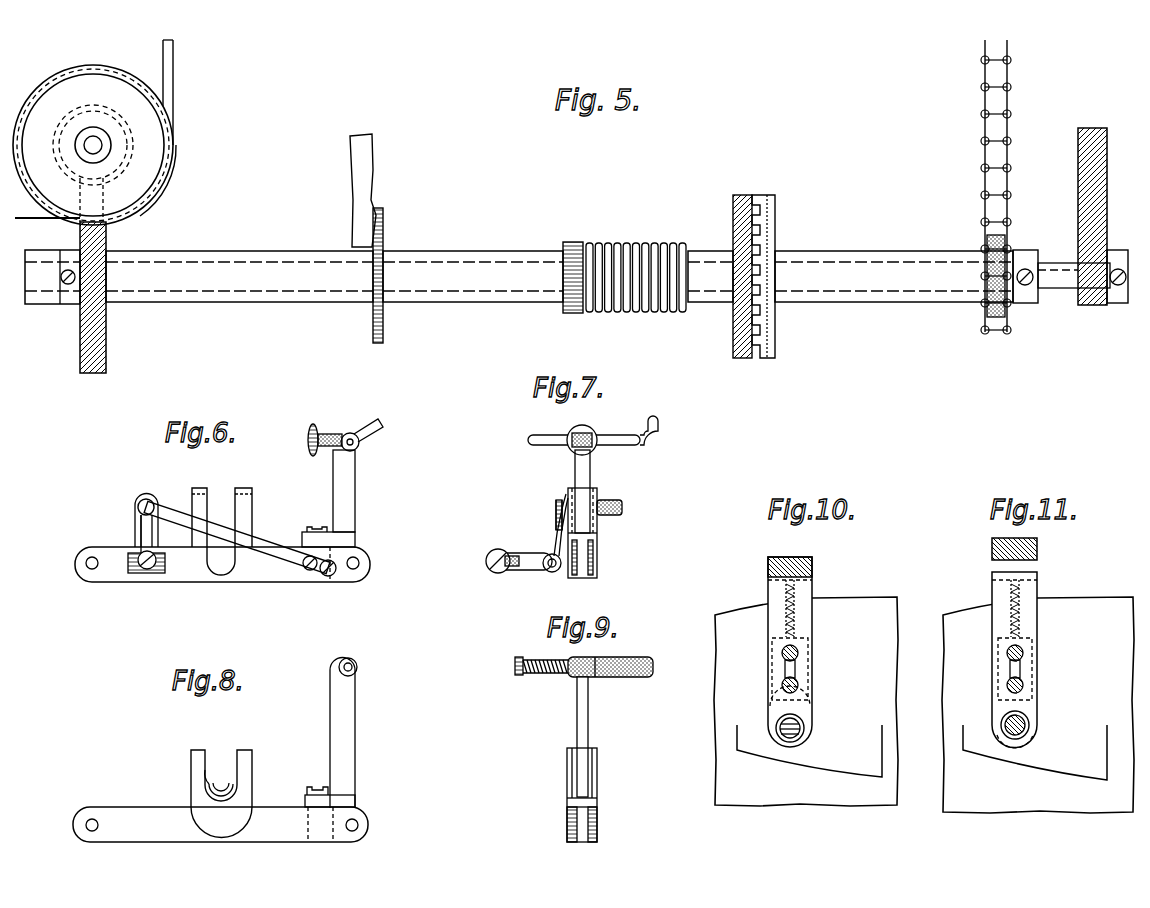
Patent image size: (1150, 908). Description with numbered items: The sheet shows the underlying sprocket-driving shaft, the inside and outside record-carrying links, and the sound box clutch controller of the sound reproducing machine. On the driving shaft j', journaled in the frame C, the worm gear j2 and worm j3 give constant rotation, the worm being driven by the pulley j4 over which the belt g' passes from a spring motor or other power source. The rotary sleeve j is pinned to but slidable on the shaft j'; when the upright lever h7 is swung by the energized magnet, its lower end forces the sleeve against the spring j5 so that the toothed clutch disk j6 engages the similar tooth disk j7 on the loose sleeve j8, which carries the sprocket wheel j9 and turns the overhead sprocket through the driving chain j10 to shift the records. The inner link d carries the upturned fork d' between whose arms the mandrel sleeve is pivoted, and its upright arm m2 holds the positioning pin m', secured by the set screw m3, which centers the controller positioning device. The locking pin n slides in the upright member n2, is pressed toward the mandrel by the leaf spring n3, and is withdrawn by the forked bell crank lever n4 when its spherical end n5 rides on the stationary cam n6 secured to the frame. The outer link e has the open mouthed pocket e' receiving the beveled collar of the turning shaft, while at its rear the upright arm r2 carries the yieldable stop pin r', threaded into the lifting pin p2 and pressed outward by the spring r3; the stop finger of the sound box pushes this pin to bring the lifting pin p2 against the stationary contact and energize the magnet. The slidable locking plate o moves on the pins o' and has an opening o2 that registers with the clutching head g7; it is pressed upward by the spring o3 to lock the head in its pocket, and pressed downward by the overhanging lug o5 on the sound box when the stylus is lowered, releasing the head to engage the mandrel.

In FIG. 5, the belt g' is at (175, 128).
In FIG. 5, the rotary sleeve j is at (558, 254).
In FIG. 5, the shaft j' is at (199, 261).
In FIG. 5, the worm gear j2 is at (106, 358).
In FIG. 5, the worm j3 is at (130, 150).
In FIG. 5, the pulley j4 is at (133, 178).
In FIG. 5, the spring j5 is at (645, 244).
In FIG. 5, the toothed clutch disk j6 is at (740, 195).
In FIG. 5, the tooth disk j7 is at (772, 230).
In FIG. 5, the loose sleeve j8 is at (885, 251).
In FIG. 5, the sprocket wheel j9 is at (985, 300).
In FIG. 5, the driving chain j10 is at (1010, 145).
In FIG. 5, the upright lever h7 is at (362, 172).
In FIG. 5, the frame C is at (1080, 168).
In FIG. 10, the frame C is at (862, 607).
In FIG. 11, the frame C is at (1105, 605).
In FIG. 6, the locking pin n is at (146, 499).
In FIG. 7, the locking pin n is at (622, 505).
In FIG. 6, the upright member n2 is at (135, 530).
In FIG. 6, the leaf spring n3 is at (262, 548).
In FIG. 7, the leaf spring n3 is at (556, 512).
In FIG. 6, the bell crank lever n4 is at (140, 535).
In FIG. 7, the bell crank lever n4 is at (556, 548).
In FIG. 6, the spherical end n5 is at (147, 570).
In FIG. 7, the spherical end n5 is at (499, 573).
In FIG. 6, the link d is at (222, 582).
In FIG. 6, the upturned fork d' is at (237, 531).
In FIG. 6, the positioning pin m' is at (377, 437).
In FIG. 6, the upright arm m2 is at (345, 513).
In FIG. 6, the set screw m3 is at (318, 430).
In FIG. 8, the link e is at (220, 809).
In FIG. 9, the link e is at (598, 795).
In FIG. 8, the open mouthed pocket e' is at (221, 781).
In FIG. 8, the stop pin r' is at (370, 666).
In FIG. 9, the stop pin r' is at (511, 685).
In FIG. 8, the upright arm r2 is at (348, 726).
In FIG. 9, the upright arm r2 is at (589, 726).
In FIG. 9, the spring r3 is at (550, 677).
In FIG. 9, the lifting pin p2 is at (655, 666).
In FIG. 10, the locking plate o is at (800, 652).
In FIG. 11, the locking plate o is at (1028, 660).
In FIG. 10, the pins o' is at (766, 669).
In FIG. 11, the pins o' is at (990, 669).
In FIG. 11, the opening o2 is at (1028, 716).
In FIG. 10, the spring o3 is at (796, 607).
In FIG. 11, the spring o3 is at (1021, 607).
In FIG. 10, the overhanging lug o5 is at (812, 560).
In FIG. 11, the overhanging lug o5 is at (1037, 548).
In FIG. 10, the stationary cam n6 is at (835, 730).
In FIG. 11, the stationary cam n6 is at (1080, 730).
In FIG. 10, the clutching head g7 is at (789, 740).
In FIG. 11, the clutching head g7 is at (1010, 738).